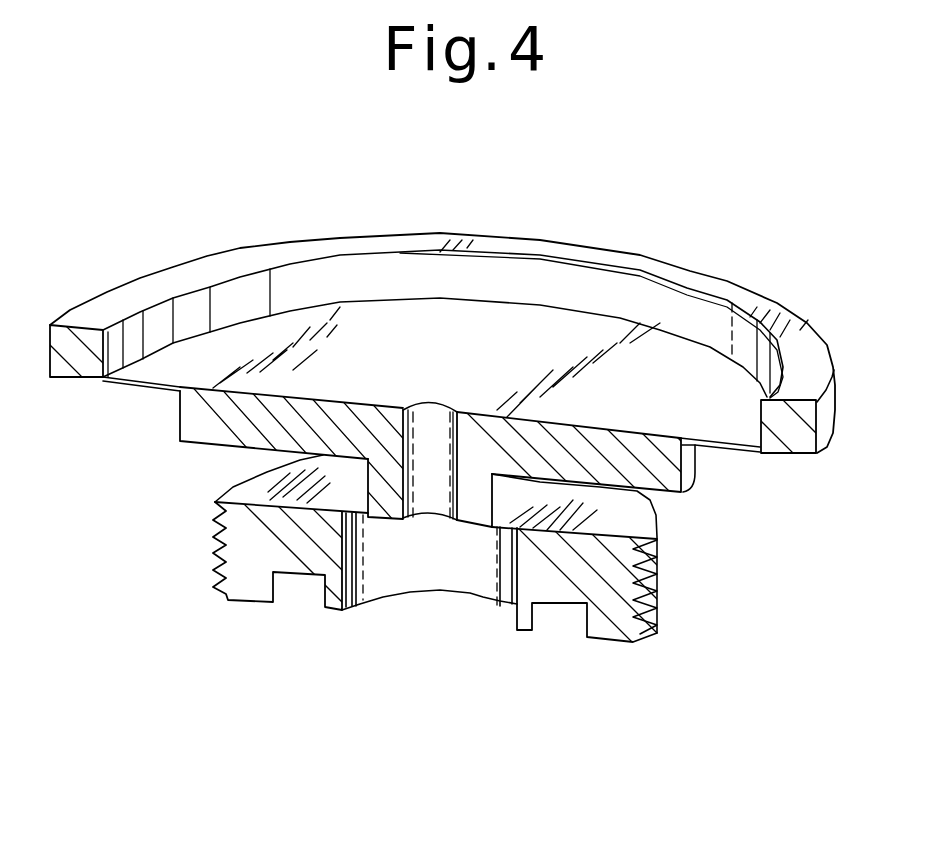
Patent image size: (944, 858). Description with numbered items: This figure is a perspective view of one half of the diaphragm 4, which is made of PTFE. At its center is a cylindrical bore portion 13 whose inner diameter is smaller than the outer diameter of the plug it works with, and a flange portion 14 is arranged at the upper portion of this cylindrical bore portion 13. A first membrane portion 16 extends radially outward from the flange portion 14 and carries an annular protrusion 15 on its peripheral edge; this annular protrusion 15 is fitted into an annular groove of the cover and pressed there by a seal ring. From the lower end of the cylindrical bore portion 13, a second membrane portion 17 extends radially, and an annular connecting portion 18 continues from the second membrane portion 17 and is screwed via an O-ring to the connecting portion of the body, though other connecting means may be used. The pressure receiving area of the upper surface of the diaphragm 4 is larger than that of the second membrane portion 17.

The diaphragm 4 is at (717, 228).
The cylindrical bore portion 13 is at (478, 497).
The flange portion 14 is at (660, 458).
The annular protrusion 15 is at (83, 362).
The first membrane portion 16 is at (147, 383).
The second membrane portion 17 is at (373, 513).
The annular connecting portion 18 is at (280, 555).